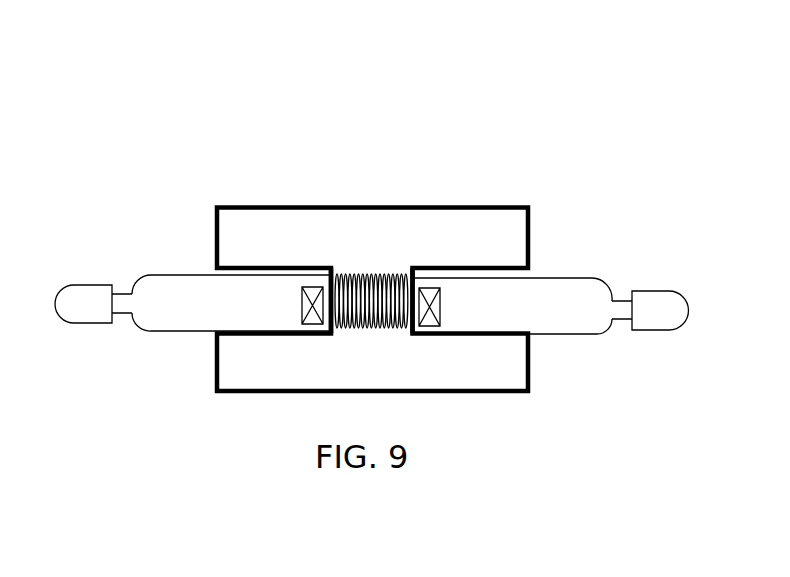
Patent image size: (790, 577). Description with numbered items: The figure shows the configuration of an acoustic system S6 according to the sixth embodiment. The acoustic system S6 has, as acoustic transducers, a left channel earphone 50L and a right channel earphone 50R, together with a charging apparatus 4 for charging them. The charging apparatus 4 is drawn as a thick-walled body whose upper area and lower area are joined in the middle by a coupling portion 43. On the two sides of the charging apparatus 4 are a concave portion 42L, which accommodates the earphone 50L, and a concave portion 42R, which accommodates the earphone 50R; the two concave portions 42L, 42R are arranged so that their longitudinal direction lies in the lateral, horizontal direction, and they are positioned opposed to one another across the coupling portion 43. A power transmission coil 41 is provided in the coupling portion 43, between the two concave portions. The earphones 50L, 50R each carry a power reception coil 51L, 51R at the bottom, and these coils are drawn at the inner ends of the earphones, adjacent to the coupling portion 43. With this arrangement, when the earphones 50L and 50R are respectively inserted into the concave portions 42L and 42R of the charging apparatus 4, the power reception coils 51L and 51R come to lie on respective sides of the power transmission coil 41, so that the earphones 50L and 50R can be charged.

The acoustic system S6 is at (344, 81).
The charging apparatus 4 is at (382, 206).
The power transmission coil 41 is at (365, 328).
The coupling portion 43 is at (374, 271).
The concave portion 42L is at (213, 273).
The concave portion 42R is at (534, 275).
The left channel earphone 50L is at (140, 286).
The right channel earphone 50R is at (604, 289).
The power reception coil 51L is at (302, 307).
The power reception coil 51R is at (442, 307).